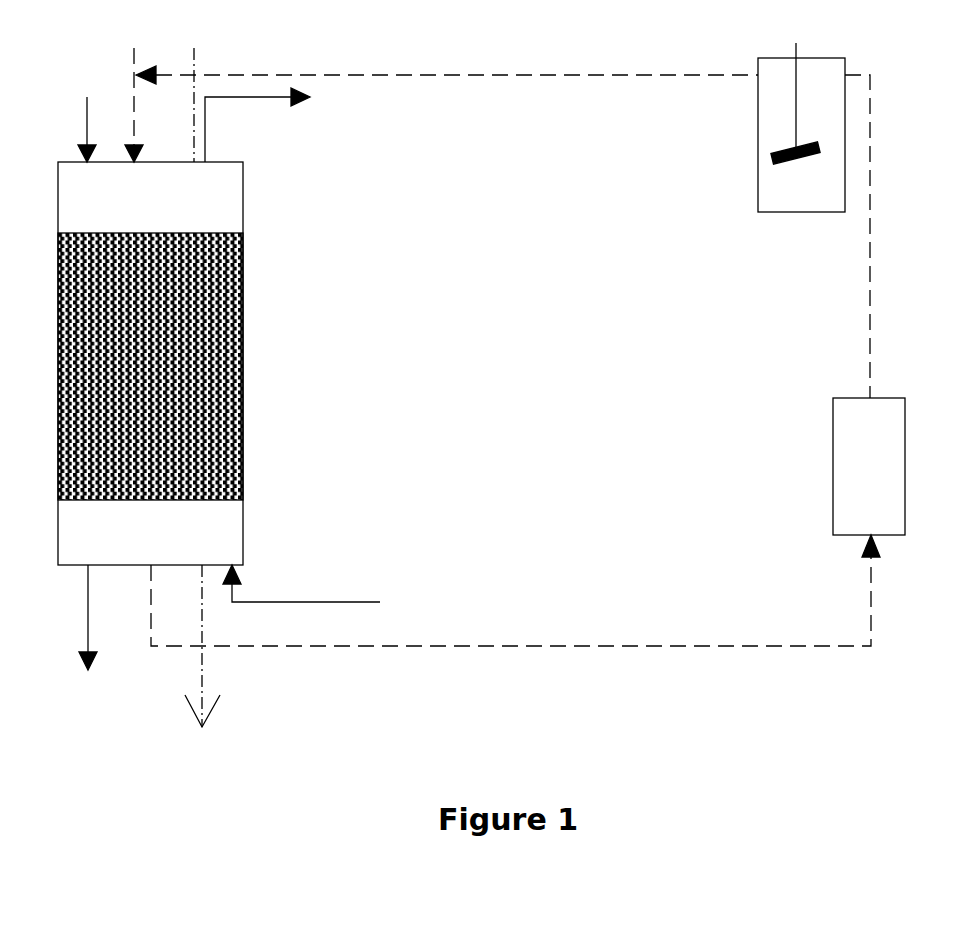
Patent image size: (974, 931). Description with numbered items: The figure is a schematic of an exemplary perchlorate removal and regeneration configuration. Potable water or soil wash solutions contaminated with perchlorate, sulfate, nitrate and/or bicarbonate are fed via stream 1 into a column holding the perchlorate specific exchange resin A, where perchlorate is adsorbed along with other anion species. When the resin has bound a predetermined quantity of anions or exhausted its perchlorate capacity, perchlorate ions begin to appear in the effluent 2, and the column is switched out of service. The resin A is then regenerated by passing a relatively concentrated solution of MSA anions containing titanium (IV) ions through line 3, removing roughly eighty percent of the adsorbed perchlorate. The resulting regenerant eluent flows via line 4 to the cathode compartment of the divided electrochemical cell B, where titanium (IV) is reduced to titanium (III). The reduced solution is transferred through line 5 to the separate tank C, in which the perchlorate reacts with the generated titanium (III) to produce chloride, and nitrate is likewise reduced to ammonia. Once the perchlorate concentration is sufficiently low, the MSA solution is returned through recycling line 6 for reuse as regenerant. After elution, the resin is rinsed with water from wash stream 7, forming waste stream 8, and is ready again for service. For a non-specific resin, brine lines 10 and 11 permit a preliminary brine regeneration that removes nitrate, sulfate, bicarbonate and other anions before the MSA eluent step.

The perchlorate specific exchange resin A is at (184, 363).
The electrochemical cell B is at (887, 466).
The separate tank C is at (783, 127).
The stream 1 is at (72, 127).
The effluent 2 is at (72, 642).
The line 3 is at (125, 104).
The line 4 is at (515, 592).
The line 5 is at (882, 236).
The recycling line 6 is at (447, 95).
The wash stream 7 is at (191, 105).
The waste stream 8 is at (202, 646).
The brine line 10 is at (304, 589).
The brine line 11 is at (266, 125).